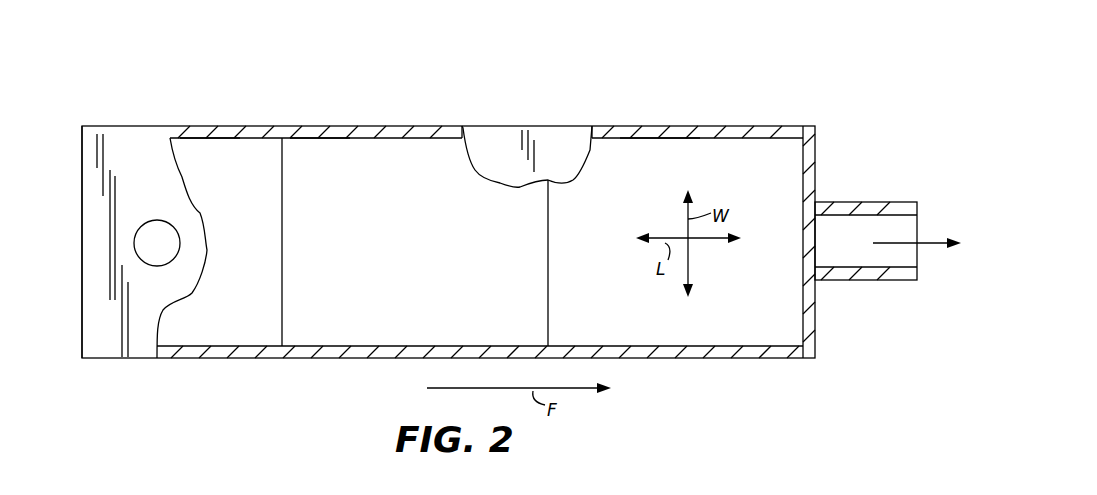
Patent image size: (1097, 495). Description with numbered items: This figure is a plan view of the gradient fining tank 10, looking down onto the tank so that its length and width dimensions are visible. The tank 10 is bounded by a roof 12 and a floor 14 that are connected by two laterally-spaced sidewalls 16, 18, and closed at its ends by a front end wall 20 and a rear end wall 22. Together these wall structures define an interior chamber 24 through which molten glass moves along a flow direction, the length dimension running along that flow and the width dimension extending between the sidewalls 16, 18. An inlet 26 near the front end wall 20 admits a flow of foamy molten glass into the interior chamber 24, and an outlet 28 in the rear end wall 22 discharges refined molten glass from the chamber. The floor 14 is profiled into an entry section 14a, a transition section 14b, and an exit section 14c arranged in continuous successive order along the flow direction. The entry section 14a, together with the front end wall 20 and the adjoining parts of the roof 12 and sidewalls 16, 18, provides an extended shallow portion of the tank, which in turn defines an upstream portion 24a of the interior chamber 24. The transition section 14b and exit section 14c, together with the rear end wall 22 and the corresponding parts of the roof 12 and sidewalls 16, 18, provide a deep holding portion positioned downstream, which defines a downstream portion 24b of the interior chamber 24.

The gradient fining tank 10 is at (164, 74).
The roof 12 is at (162, 186).
The floor 14 is at (211, 331).
The entry section 14a is at (260, 258).
The transition section 14b is at (394, 258).
The exit section 14c is at (598, 258).
The sidewall 16 is at (343, 360).
The sidewall 18 is at (430, 137).
The front end wall 20 is at (82, 243).
The rear end wall 22 is at (810, 161).
The interior chamber 24 is at (334, 146).
The upstream portion 24a is at (193, 142).
The downstream portion 24b is at (647, 138).
The inlet 26 is at (145, 250).
The outlet 28 is at (815, 233).